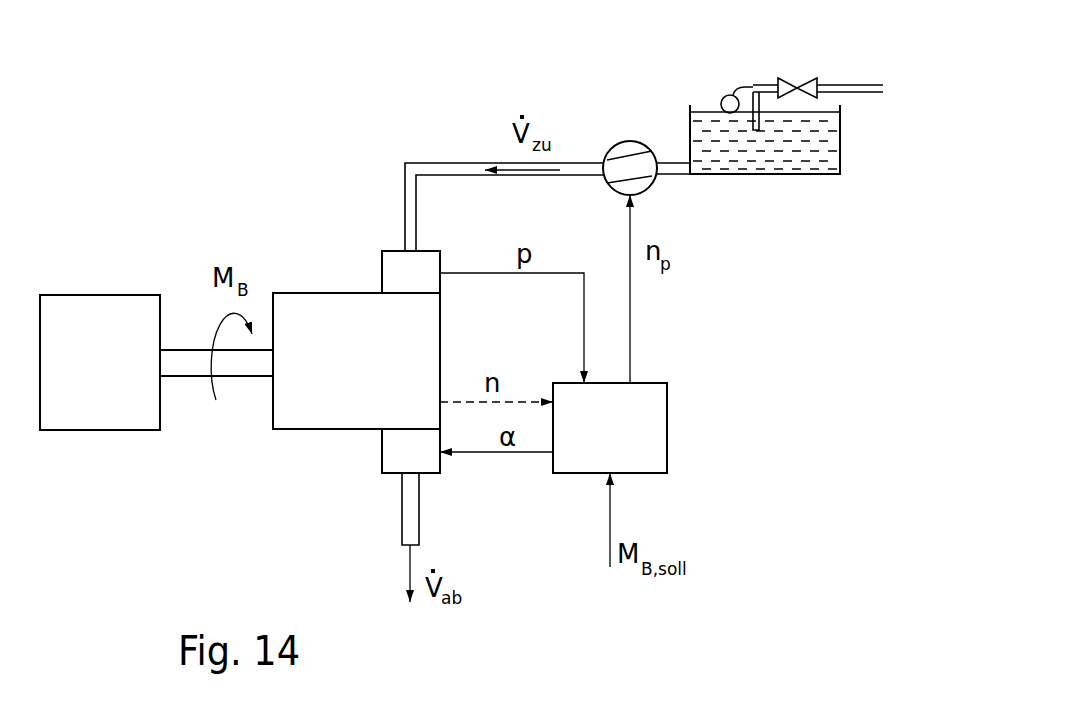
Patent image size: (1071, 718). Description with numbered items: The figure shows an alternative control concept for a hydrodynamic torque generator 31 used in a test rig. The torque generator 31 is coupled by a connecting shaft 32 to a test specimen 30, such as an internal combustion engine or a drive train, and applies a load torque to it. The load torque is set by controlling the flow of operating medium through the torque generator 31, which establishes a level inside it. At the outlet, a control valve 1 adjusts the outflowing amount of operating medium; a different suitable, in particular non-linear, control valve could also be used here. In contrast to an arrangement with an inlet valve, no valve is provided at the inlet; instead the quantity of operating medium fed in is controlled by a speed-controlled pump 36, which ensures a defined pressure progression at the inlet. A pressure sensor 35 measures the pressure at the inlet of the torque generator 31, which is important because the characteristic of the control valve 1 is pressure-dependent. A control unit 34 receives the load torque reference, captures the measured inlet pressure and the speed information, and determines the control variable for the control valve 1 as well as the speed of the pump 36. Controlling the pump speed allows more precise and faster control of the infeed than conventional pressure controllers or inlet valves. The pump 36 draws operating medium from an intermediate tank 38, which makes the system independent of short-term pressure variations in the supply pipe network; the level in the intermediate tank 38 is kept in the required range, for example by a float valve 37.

The control valve 1 is at (402, 450).
The test specimen 30 is at (119, 376).
The hydrodynamic torque generator 31 is at (363, 366).
The connecting shaft 32 is at (197, 362).
The control unit 34 is at (628, 441).
The pressure sensor 35 is at (406, 279).
The speed-controlled pump 36 is at (620, 142).
The float valve 37 is at (725, 95).
The intermediate tank 38 is at (778, 147).